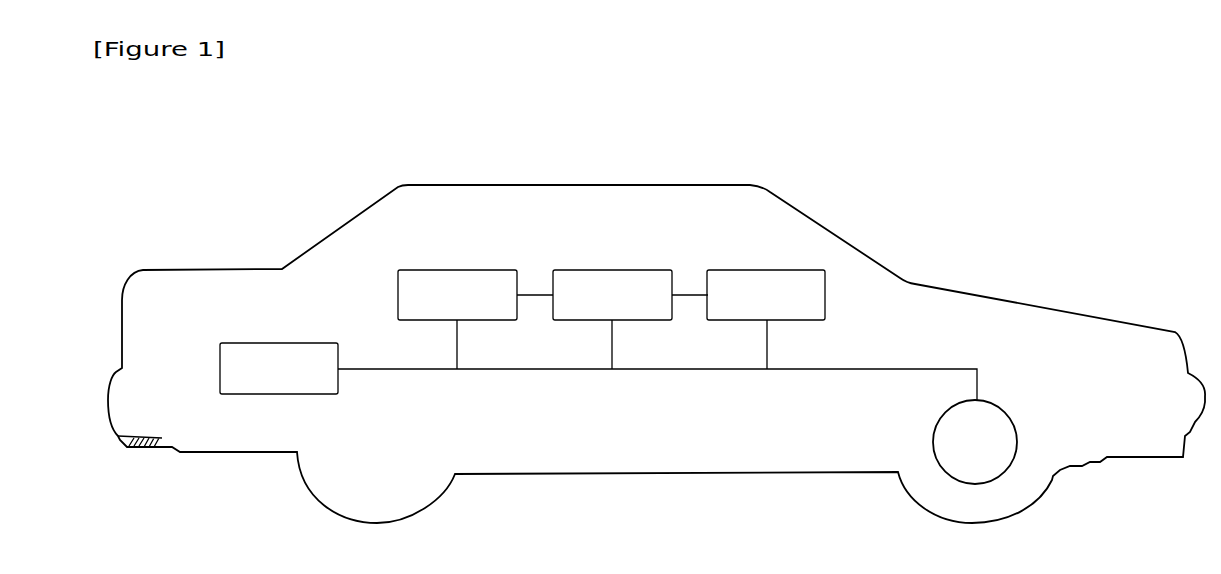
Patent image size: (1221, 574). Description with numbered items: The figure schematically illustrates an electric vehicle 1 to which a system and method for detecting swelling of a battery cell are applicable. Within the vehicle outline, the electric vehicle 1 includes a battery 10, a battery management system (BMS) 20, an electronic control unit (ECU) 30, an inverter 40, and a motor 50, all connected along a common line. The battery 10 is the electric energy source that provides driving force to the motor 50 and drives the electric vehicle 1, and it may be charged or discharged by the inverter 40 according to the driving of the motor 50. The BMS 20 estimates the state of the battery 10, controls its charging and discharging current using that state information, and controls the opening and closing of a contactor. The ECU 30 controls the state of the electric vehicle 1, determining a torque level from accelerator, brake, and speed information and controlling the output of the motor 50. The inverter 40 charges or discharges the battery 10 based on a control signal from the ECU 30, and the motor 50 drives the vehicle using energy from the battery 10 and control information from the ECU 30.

The electric vehicle 1 is at (725, 185).
The battery 10 is at (313, 343).
The battery management system (BMS) 20 is at (480, 270).
The electronic control unit (ECU) 30 is at (636, 270).
The inverter 40 is at (790, 270).
The motor 50 is at (1009, 410).